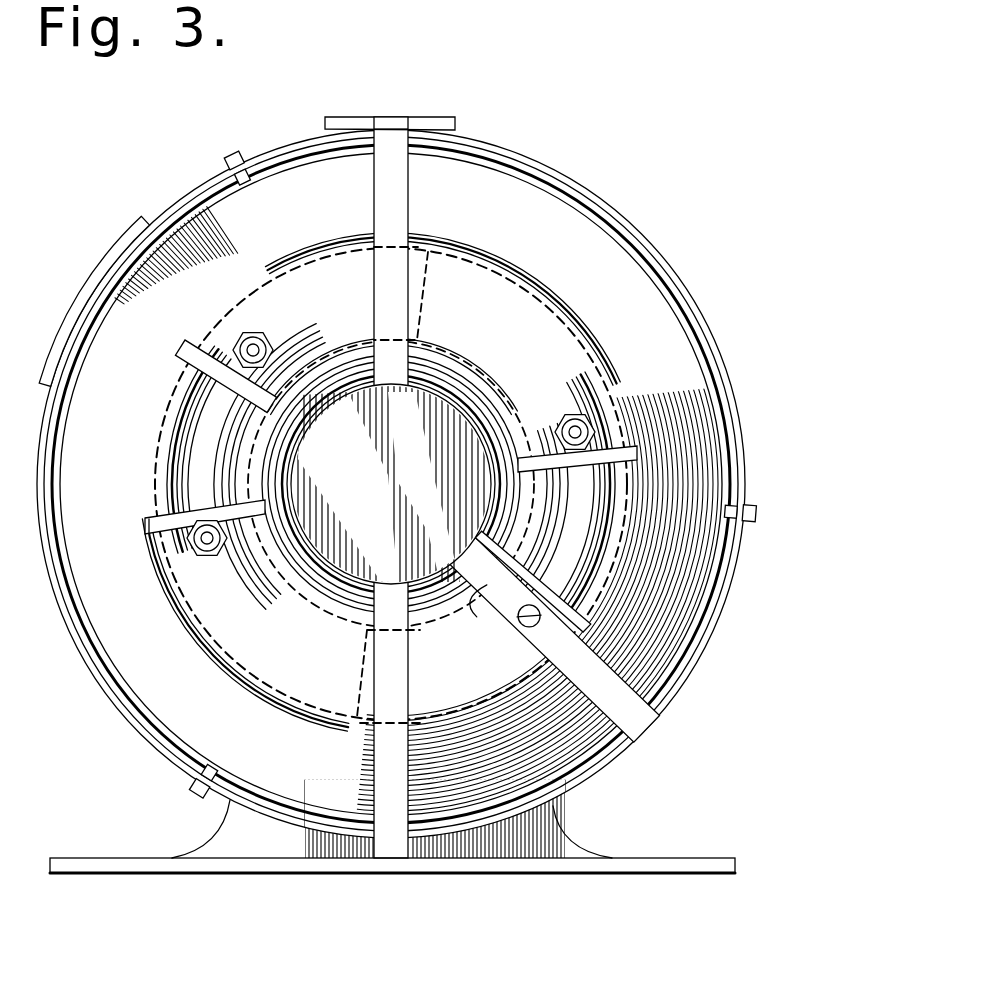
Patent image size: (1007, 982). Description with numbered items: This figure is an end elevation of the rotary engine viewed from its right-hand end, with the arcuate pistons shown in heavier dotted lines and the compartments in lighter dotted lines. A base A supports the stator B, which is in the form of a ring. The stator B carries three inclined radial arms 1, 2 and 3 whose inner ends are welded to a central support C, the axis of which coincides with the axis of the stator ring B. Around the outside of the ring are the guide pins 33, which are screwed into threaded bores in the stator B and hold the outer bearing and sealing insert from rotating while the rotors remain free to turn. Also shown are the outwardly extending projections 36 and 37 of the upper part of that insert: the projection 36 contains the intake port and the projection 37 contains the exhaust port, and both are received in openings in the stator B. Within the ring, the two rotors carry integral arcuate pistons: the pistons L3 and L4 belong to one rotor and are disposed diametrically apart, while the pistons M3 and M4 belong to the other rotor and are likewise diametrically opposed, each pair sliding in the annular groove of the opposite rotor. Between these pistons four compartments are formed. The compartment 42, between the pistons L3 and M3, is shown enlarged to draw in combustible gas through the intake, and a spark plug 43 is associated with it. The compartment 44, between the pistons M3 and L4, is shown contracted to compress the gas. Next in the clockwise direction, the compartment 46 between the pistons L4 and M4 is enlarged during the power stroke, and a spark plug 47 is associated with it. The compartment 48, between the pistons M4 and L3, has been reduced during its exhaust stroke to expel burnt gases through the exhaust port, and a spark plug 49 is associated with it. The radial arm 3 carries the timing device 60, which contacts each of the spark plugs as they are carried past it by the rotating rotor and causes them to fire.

The radial arm 1 is at (376, 192).
The radial arm 2 is at (388, 748).
The radial arm 3 is at (650, 725).
The guide pin 33 is at (233, 160).
The outwardly extending projection 36 is at (435, 121).
The outwardly extending projection 37 is at (126, 246).
The compartment 42 is at (528, 290).
The spark plug 43 is at (577, 412).
The compartment 44 is at (567, 692).
The compartment 46 is at (240, 617).
The spark plug 47 is at (200, 557).
The compartment 48 is at (190, 343).
The spark plug 49 is at (238, 330).
The timing device 60 is at (545, 607).
The base A is at (578, 818).
The stator B is at (600, 197).
The central support C is at (381, 452).
The piston L3 is at (418, 228).
The piston L4 is at (358, 668).
The piston M3 is at (618, 424).
The piston M4 is at (158, 450).